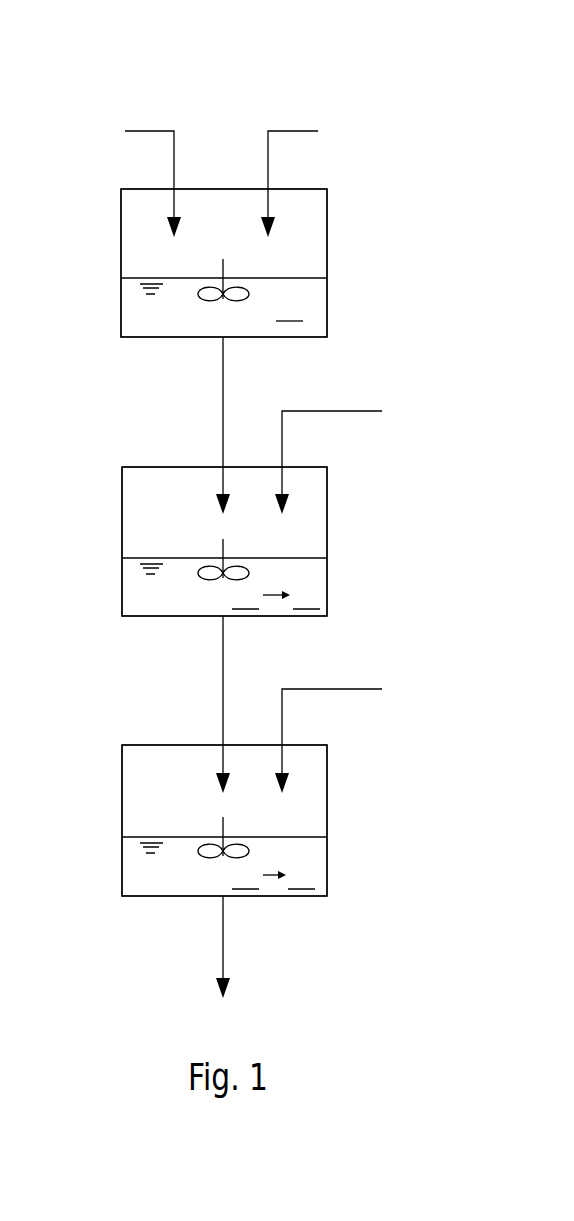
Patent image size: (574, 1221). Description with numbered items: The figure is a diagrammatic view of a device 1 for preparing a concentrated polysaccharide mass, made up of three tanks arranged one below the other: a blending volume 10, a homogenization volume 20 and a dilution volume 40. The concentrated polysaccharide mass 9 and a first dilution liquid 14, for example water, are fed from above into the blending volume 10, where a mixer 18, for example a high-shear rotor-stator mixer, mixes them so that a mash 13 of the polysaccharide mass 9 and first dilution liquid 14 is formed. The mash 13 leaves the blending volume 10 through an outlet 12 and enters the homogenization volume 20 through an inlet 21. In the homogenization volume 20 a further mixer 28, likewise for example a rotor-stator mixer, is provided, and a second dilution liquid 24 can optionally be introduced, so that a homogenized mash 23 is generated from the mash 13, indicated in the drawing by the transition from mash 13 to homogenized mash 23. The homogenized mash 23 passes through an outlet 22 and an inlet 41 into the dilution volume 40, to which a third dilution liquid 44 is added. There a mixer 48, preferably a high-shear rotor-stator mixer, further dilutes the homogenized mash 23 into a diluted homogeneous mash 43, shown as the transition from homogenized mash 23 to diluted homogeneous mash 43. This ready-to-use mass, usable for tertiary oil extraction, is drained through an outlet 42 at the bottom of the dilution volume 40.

The device for preparing a concentrated polysaccharide mass 1 is at (413, 109).
The polysaccharide mass 9 is at (143, 129).
The first dilution liquid 14 is at (293, 130).
The blending volume 10 is at (327, 256).
The mash 13 is at (291, 306).
The mixer in the blending tank 18 is at (205, 302).
The outlet in the blending tank for mash 12 is at (223, 353).
The inlet in the homogenization volume for mash 21 is at (223, 463).
The second dilution liquid 24 is at (337, 411).
The homogenization volume 20 is at (327, 532).
The homogenized mash 23 is at (278, 597).
The mixer in the homogenization volume 28 is at (205, 583).
The outlet in the homogenization volume for homogenized mash 22 is at (223, 647).
The inlet in the dilution volume for homogenized mash 41 is at (223, 737).
The third dilution liquid 44 is at (337, 689).
The dilution volume 40 is at (327, 800).
The diluted homogeneous mash 43 is at (275, 877).
The mixer in the dilution volume 48 is at (205, 860).
The outlet in the dilution volume for diluted homogenized mash 42 is at (223, 933).